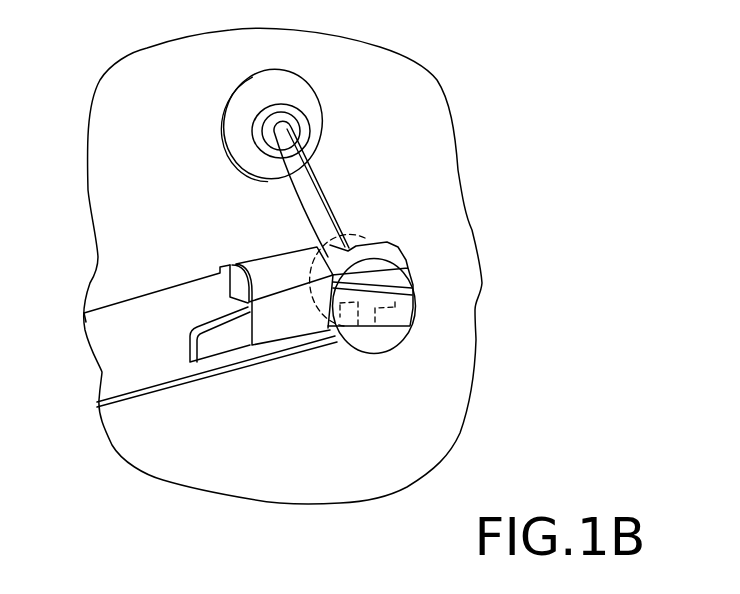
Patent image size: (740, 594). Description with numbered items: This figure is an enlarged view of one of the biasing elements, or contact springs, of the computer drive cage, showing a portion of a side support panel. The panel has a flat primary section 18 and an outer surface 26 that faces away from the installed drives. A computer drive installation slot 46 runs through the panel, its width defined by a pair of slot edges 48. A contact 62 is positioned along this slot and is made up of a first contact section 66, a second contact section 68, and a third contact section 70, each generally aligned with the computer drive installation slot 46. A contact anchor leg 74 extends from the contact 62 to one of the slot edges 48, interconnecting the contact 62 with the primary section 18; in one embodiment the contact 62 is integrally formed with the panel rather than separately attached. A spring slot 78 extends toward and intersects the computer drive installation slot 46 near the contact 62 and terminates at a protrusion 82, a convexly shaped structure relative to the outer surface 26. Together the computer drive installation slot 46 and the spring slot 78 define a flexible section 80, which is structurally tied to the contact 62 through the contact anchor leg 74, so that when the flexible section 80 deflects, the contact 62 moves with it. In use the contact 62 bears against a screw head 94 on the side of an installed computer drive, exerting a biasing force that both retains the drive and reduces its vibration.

The primary section 18 is at (130, 161).
The outer surface 26 is at (295, 419).
The computer drive installation slot 46 is at (144, 345).
The slot edge 48 is at (97, 300).
The contact 62 is at (297, 336).
The first contact section 66 is at (220, 352).
The second contact section 68 is at (273, 328).
The third contact section 70 is at (402, 303).
The contact anchor leg 74 is at (280, 267).
The spring slot 78 is at (327, 215).
The flexible section 80 is at (252, 230).
The protrusion 82 is at (297, 92).
The screw head 94 is at (403, 270).